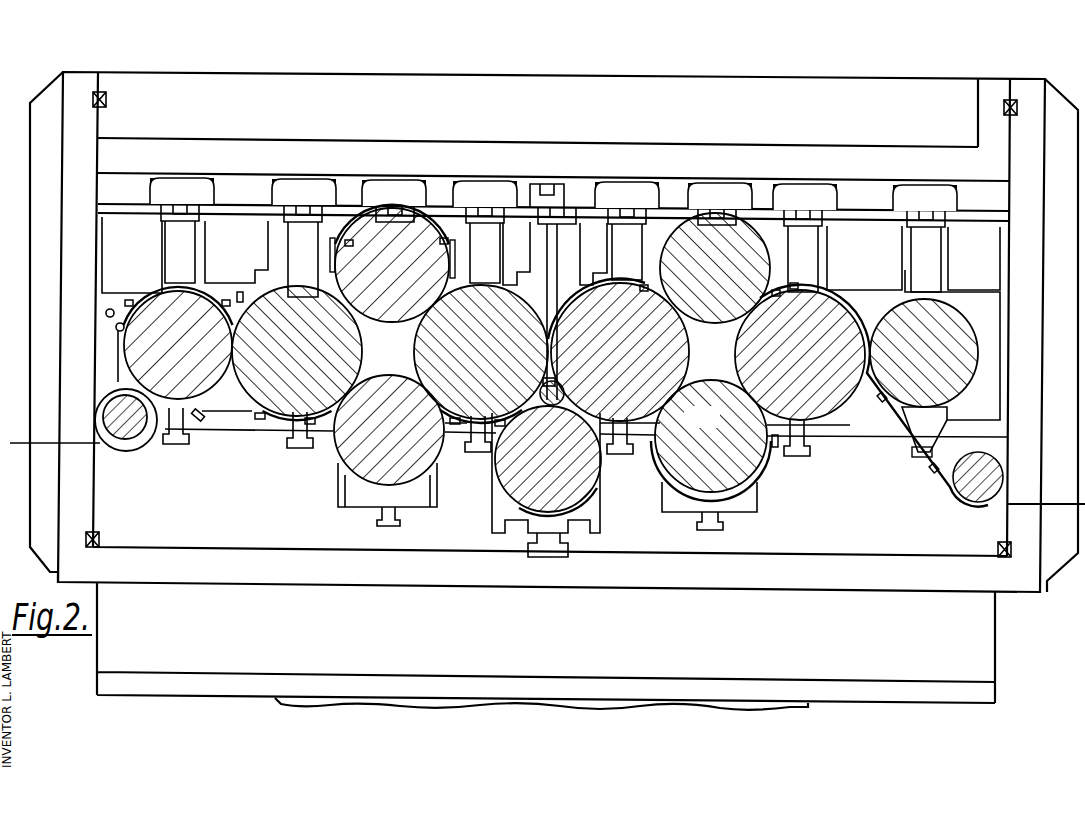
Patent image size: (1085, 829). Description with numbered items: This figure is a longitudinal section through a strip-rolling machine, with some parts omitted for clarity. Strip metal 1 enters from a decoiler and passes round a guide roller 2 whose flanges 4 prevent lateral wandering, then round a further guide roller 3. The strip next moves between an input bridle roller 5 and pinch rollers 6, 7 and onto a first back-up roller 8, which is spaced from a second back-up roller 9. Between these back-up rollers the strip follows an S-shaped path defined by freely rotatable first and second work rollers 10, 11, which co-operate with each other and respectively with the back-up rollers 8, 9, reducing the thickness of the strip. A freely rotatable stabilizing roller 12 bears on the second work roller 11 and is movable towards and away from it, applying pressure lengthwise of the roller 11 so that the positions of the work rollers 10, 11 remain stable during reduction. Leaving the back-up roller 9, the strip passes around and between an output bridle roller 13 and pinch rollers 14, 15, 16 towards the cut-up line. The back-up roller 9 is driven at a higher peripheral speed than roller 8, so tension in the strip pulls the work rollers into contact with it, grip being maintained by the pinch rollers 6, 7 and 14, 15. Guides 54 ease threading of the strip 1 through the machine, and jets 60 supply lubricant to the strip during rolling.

The strip metal 1 is at (55, 432).
The guide roller 2 is at (145, 438).
The guide roller 3 is at (208, 368).
The flanges 4 is at (115, 395).
The input bridle roller 5 is at (302, 300).
The pinch roller 6 is at (352, 248).
The pinch roller 7 is at (418, 460).
The first back-up roller 8 is at (477, 293).
The second back-up roller 9 is at (598, 285).
The first work roller 10 is at (548, 402).
The second work roller 11 is at (562, 403).
The stabilizing roller 12 is at (590, 492).
The output bridle roller 13 is at (827, 420).
The pinch roller 14 is at (753, 262).
The pinch roller 15 is at (682, 482).
The pinch roller 16 is at (968, 368).
The guides 54 is at (175, 293).
The jets 60 is at (237, 293).